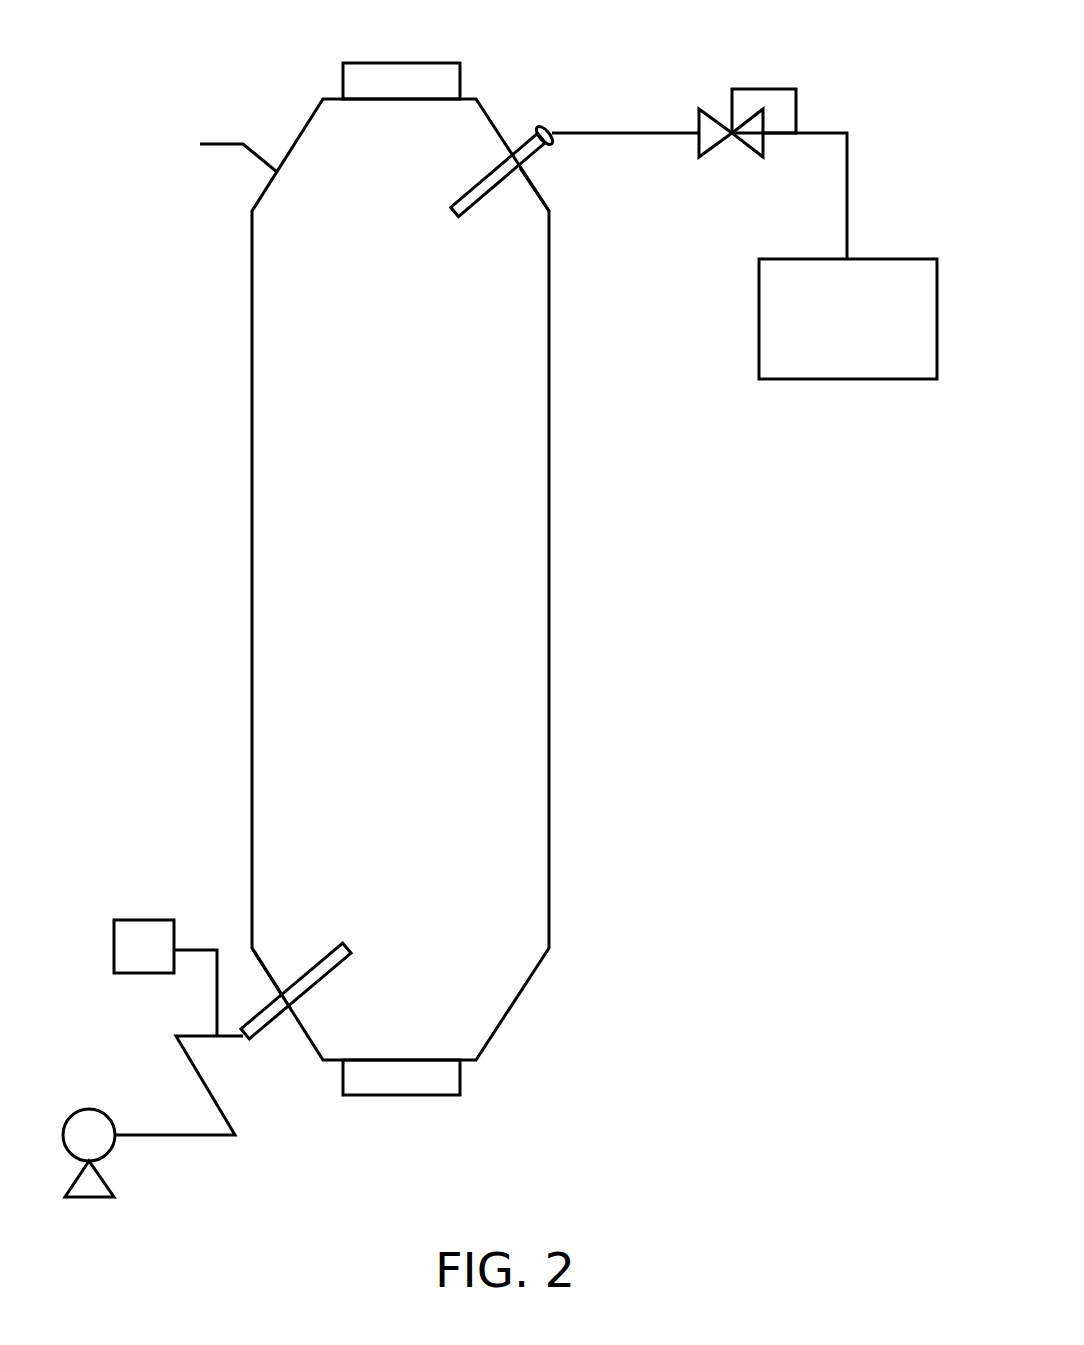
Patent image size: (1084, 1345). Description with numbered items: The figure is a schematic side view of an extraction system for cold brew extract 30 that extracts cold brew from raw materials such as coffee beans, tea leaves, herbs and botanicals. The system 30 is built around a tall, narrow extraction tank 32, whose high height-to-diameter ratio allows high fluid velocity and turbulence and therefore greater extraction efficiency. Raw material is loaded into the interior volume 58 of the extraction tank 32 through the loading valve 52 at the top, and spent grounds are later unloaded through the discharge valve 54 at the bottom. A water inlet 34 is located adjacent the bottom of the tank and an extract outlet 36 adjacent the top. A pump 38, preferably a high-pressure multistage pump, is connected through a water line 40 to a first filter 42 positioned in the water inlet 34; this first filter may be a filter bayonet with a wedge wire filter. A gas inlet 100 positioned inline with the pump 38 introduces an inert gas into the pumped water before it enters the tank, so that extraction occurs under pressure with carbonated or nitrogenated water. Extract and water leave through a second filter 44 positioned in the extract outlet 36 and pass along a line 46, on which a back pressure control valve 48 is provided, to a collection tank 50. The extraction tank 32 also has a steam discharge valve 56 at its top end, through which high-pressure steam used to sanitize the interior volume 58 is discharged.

The extraction system for cold brew extract 30 is at (138, 84).
The extraction tank 32 is at (549, 657).
The water inlet 34 is at (282, 981).
The extract outlet 36 is at (533, 180).
The pump 38 is at (88, 1110).
The water line 40 is at (175, 1138).
The first filter 42 is at (330, 979).
The second filter 44 is at (516, 138).
The line 46 is at (612, 133).
The back pressure control valve 48 is at (762, 89).
The collection tank 50 is at (845, 380).
The loading valve 52 is at (400, 63).
The discharge valve 54 is at (406, 1097).
The steam discharge valve 56 is at (224, 144).
The interior volume 58 is at (412, 537).
The gas inlet 100 is at (165, 978).